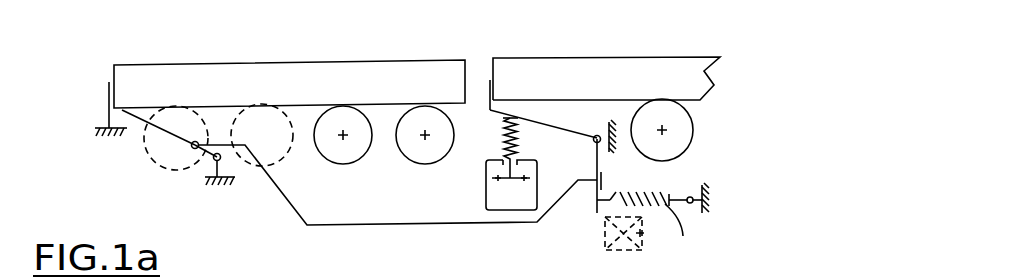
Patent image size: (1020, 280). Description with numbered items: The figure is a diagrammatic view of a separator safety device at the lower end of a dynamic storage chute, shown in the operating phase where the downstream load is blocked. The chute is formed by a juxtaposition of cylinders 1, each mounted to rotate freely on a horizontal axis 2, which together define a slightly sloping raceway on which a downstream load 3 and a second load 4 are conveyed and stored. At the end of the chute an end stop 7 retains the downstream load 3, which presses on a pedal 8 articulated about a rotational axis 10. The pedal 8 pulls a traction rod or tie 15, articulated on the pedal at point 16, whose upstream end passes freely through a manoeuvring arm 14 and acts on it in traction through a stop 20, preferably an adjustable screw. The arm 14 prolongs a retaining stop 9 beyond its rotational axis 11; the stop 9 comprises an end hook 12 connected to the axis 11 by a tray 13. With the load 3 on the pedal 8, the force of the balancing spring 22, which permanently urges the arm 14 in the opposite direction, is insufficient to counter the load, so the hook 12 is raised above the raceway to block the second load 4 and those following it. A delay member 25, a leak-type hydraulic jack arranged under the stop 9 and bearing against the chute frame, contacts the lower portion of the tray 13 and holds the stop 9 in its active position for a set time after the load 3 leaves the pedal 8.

The cylinders 1 is at (171, 115).
The horizontal axis 2 is at (343, 133).
The downstream load 3 is at (388, 77).
The second load 4 is at (617, 80).
The end stop 7 is at (104, 91).
The pedal 8 is at (168, 141).
The retaining stop 9 is at (486, 120).
The rotational axis 10 is at (214, 160).
The rotational axis 11 is at (594, 142).
The end hook 12 is at (490, 88).
The tray 13 is at (540, 125).
The manoeuvring arm 14 is at (590, 210).
The traction rod or tie 15 is at (374, 226).
The articulation 16 is at (198, 143).
The stop 20 is at (614, 172).
The balancing spring 22 is at (648, 234).
The delay member 25 is at (480, 196).